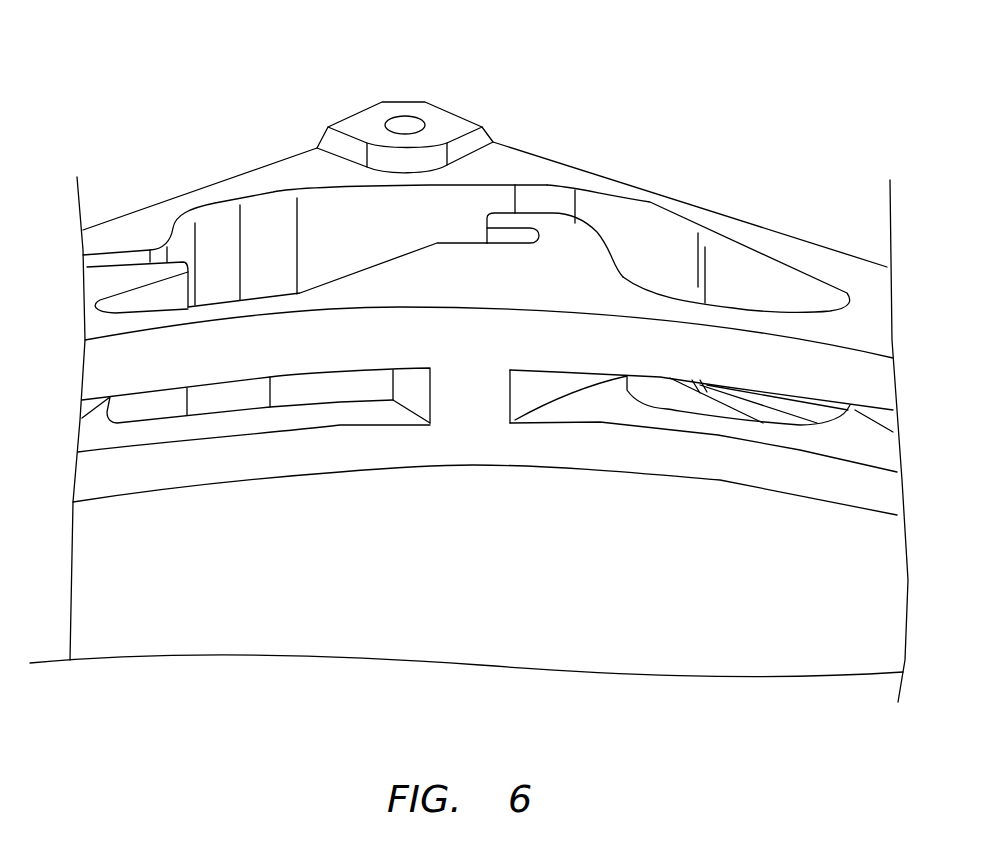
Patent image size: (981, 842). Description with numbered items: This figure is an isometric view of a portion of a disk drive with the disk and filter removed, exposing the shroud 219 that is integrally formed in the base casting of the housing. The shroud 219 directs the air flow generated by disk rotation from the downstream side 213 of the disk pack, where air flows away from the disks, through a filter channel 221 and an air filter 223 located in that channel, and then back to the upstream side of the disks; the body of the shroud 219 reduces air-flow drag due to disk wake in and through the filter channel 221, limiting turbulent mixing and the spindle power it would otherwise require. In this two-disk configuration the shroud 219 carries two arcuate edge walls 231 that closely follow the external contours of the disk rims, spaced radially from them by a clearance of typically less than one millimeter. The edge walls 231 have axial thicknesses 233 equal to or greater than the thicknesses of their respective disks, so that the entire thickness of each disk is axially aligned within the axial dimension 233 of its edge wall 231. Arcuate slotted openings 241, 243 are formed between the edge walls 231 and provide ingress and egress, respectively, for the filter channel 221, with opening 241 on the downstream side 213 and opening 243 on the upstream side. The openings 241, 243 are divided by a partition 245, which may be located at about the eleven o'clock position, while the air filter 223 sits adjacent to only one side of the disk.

The downstream side 213 is at (814, 170).
The shroud 219 is at (584, 532).
The filter channel 221 is at (633, 235).
The air filter 223 is at (463, 243).
The edge walls 231 is at (480, 338).
The axial thicknesses of the edge walls 233 is at (368, 277).
The arcuate slotted opening 241 is at (610, 407).
The arcuate slotted opening 243 is at (283, 393).
The partition 245 is at (473, 408).